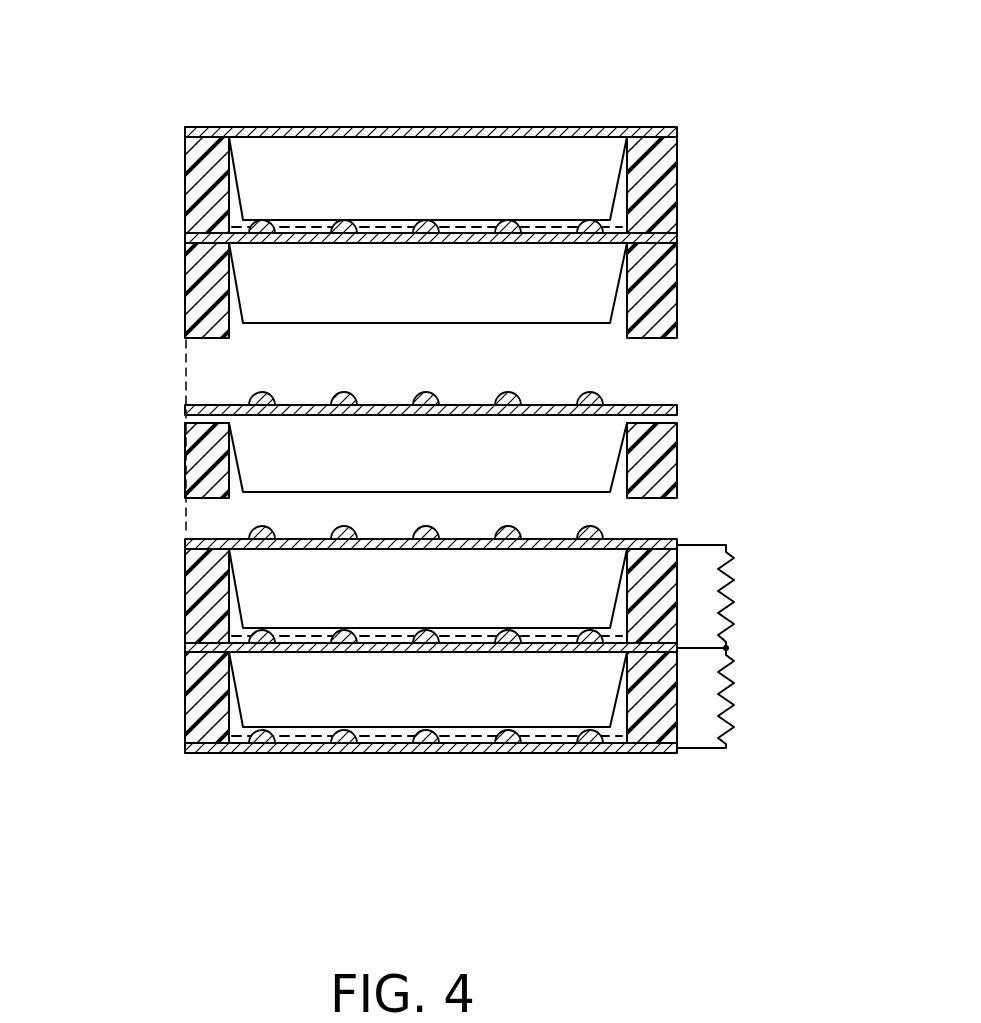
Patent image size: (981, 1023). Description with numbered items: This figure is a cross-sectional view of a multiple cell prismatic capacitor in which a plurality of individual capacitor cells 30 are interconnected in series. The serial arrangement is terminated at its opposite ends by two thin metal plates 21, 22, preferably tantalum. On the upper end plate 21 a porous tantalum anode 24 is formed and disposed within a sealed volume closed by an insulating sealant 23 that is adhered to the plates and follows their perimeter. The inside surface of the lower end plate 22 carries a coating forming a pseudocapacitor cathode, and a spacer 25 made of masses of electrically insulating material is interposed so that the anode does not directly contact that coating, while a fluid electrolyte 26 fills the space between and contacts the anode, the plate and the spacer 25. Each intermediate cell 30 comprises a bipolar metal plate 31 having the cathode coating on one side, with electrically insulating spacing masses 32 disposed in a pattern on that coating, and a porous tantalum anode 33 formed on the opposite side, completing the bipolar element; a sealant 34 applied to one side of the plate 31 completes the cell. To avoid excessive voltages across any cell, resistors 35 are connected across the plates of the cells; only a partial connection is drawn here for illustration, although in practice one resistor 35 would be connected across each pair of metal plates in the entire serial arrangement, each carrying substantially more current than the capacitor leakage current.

The metal body 21 is at (544, 128).
The metal body 22 is at (612, 758).
The insulating sealant 23 is at (666, 190).
The porous tantalum anode 24 is at (285, 165).
The spacer 25 is at (262, 755).
The fluid electrolyte 26 is at (455, 755).
The capacitor cell 30 is at (414, 451).
The bipolar metal plate 31 is at (205, 405).
The spacing masses 32 is at (505, 395).
The porous tantalum anode 33 is at (270, 468).
The sealant 34 is at (193, 455).
The resistor 35 is at (730, 605).